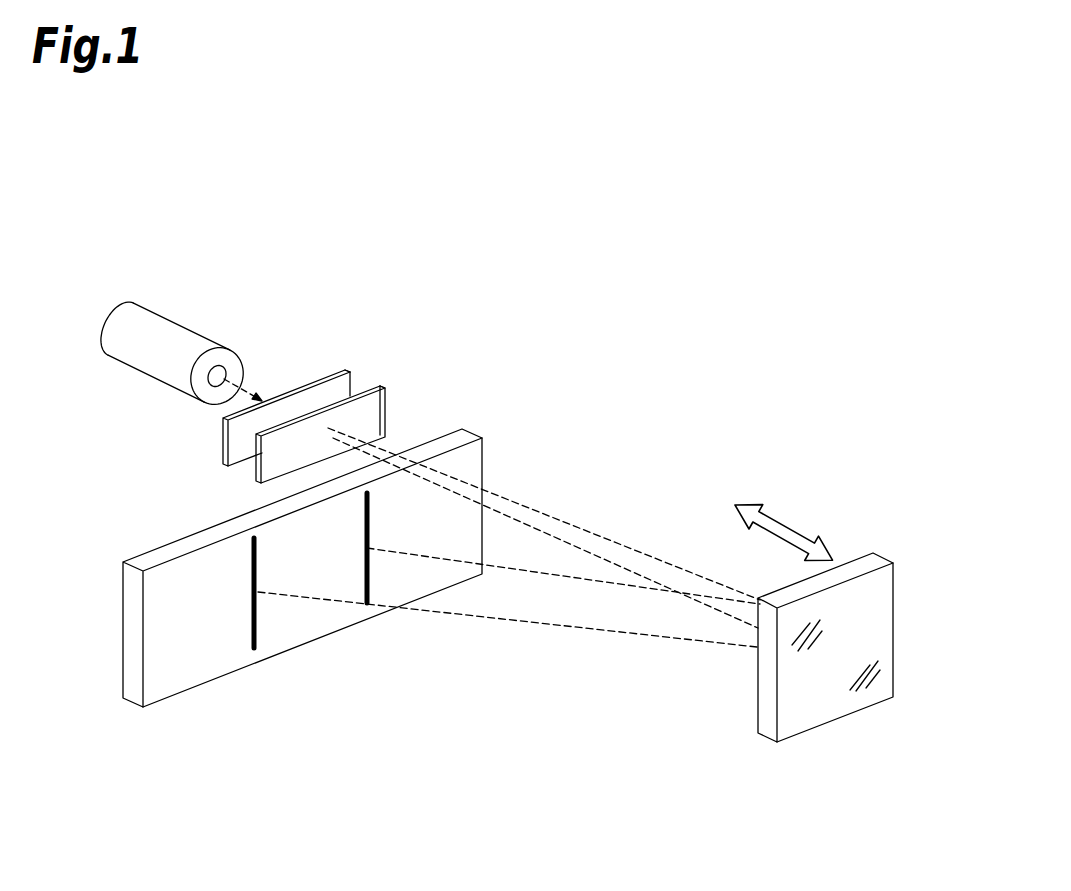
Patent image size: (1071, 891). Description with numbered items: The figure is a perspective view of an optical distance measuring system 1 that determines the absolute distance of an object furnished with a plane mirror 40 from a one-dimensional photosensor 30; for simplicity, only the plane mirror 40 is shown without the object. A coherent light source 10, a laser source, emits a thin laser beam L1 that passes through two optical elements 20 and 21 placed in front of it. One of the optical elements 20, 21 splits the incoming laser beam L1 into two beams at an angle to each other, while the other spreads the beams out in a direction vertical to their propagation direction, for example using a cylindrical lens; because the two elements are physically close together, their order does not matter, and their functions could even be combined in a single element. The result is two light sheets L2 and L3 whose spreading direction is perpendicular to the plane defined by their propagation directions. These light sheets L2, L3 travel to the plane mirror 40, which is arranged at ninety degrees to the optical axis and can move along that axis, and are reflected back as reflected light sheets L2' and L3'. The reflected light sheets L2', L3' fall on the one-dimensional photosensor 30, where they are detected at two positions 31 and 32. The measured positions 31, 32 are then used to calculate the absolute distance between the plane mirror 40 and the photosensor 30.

The optical distance measuring system 1 is at (275, 290).
The coherent light source 10 is at (172, 330).
The laser beam L1 is at (257, 393).
The optical element 20 is at (342, 384).
The optical element 21 is at (378, 413).
The light sheet L2 is at (544, 514).
The light sheet L3 is at (545, 533).
The reflected light sheet L2' is at (563, 616).
The reflected light sheet L3' is at (507, 649).
The one-dimensional photosensor 30 is at (302, 592).
The position 31 is at (261, 638).
The position 32 is at (378, 594).
The plane mirror 40 is at (877, 600).